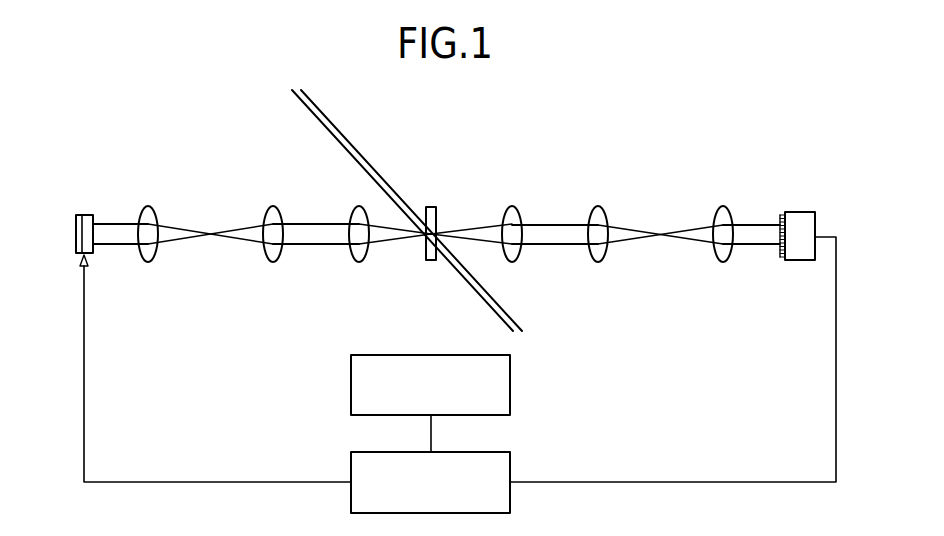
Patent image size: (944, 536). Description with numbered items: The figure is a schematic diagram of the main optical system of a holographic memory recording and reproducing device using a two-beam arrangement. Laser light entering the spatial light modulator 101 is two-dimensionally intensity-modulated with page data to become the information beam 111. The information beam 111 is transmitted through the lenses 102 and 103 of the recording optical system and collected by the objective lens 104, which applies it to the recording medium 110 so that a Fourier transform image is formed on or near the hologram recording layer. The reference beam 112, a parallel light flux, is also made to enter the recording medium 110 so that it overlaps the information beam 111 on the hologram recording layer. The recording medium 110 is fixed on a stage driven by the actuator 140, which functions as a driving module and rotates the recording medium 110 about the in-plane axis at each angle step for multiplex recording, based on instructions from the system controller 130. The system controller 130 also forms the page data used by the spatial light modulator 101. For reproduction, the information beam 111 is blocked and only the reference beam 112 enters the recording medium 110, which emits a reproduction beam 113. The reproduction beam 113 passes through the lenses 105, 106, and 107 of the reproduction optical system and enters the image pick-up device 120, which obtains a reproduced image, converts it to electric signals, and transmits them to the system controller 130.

The spatial light modulator 101 is at (87, 214).
The lens 102 is at (148, 206).
The lens 103 is at (272, 206).
The objective lens 104 is at (359, 262).
The lens 105 is at (511, 206).
The lens 106 is at (597, 206).
The lens 107 is at (721, 206).
The recording medium 110 is at (431, 206).
The information beam 111 is at (120, 247).
The reference beam 112 is at (348, 138).
The reproduction beam 113 is at (555, 247).
The image pick-up device 120 is at (799, 212).
The system controller 130 is at (512, 457).
The actuator 140 is at (512, 383).